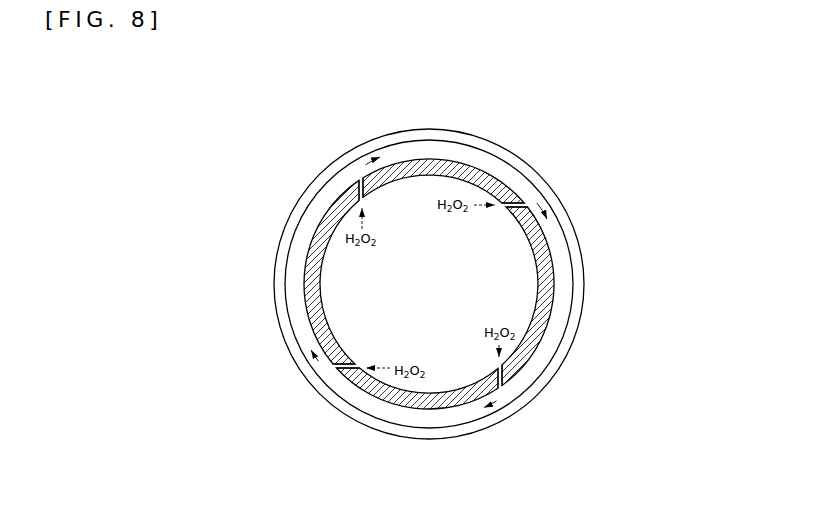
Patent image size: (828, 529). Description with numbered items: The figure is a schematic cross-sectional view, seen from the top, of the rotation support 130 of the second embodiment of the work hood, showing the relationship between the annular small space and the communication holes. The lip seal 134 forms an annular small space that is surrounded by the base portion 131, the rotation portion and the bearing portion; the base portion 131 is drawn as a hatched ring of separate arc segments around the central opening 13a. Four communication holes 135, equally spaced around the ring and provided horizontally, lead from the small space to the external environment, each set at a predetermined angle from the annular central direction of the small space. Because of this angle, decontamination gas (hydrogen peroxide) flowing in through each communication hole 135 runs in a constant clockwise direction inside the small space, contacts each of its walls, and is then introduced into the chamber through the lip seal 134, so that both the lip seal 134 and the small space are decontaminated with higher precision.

The rotation support 130 is at (414, 275).
The sealing member (lip seal) 134 is at (558, 361).
The base portion 131 is at (580, 273).
The communication hole 135 is at (361, 181).
The opening 13a is at (353, 300).